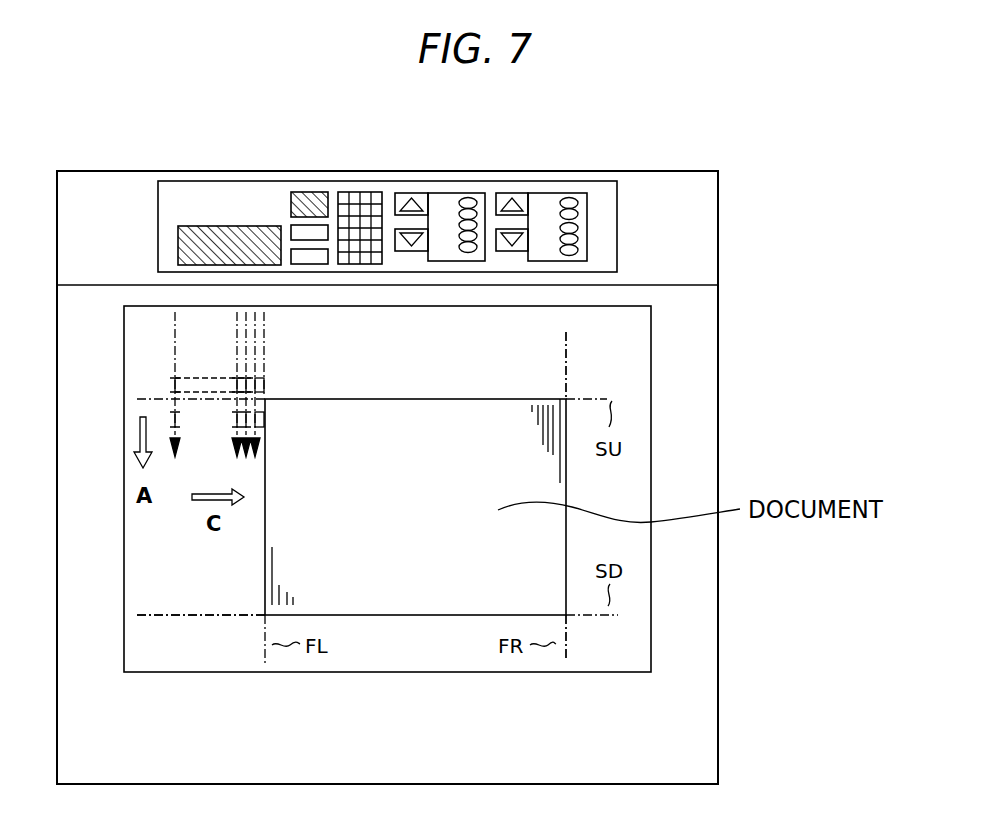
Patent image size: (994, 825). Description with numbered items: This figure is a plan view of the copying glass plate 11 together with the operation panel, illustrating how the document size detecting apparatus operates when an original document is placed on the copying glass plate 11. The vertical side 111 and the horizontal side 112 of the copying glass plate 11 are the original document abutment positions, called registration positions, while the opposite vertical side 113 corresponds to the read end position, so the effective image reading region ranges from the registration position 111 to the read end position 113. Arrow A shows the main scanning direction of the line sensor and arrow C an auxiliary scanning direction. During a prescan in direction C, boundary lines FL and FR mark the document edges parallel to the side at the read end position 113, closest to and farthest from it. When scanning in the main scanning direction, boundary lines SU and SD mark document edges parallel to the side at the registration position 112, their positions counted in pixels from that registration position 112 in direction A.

The copying glass plate 11 is at (226, 673).
The vertical side of the copying glass plate 111 is at (651, 644).
The horizontal side of the copying glass plate 112 is at (593, 307).
The vertical side of the copying glass plate 113 is at (124, 645).